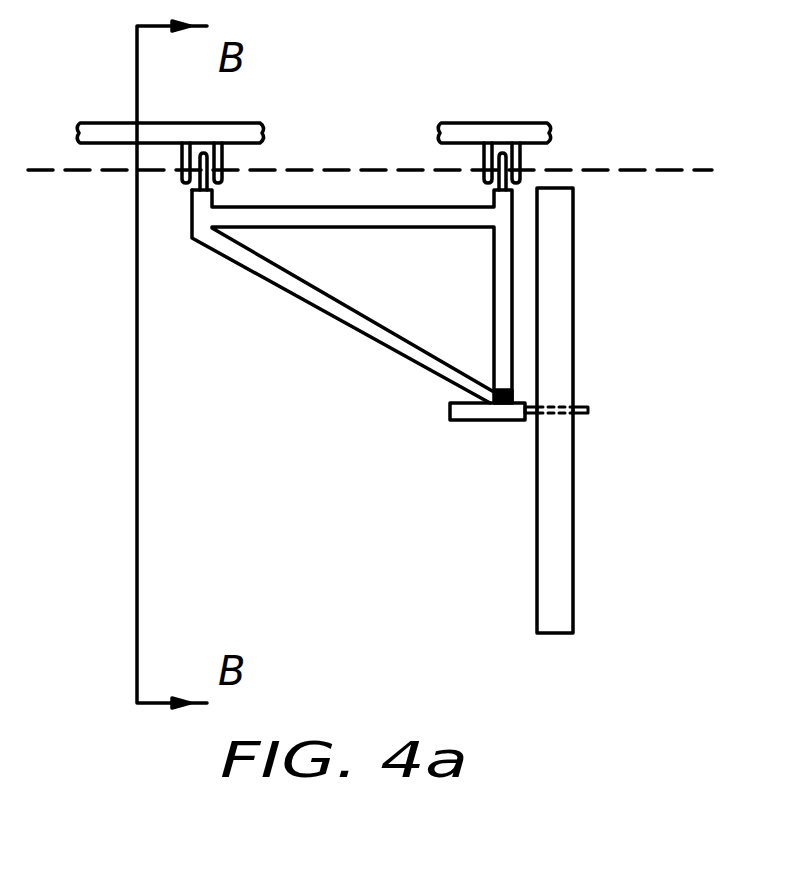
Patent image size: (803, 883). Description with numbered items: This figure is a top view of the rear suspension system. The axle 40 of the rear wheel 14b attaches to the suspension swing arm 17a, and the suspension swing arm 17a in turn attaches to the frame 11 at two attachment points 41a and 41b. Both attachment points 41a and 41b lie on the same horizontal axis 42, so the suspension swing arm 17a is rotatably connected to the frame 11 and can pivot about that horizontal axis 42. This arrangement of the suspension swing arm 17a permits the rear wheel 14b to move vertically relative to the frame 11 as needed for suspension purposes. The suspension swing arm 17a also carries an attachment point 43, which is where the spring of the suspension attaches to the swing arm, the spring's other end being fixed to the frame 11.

The frame 11 is at (213, 123).
The attachment point 41a is at (220, 160).
The attachment point 41b is at (520, 158).
The horizontal axis 42 is at (388, 168).
The suspension swing arm 17a is at (378, 350).
The attachment point 43 is at (500, 402).
The axle 40 is at (585, 408).
The rear wheel 14b is at (573, 600).